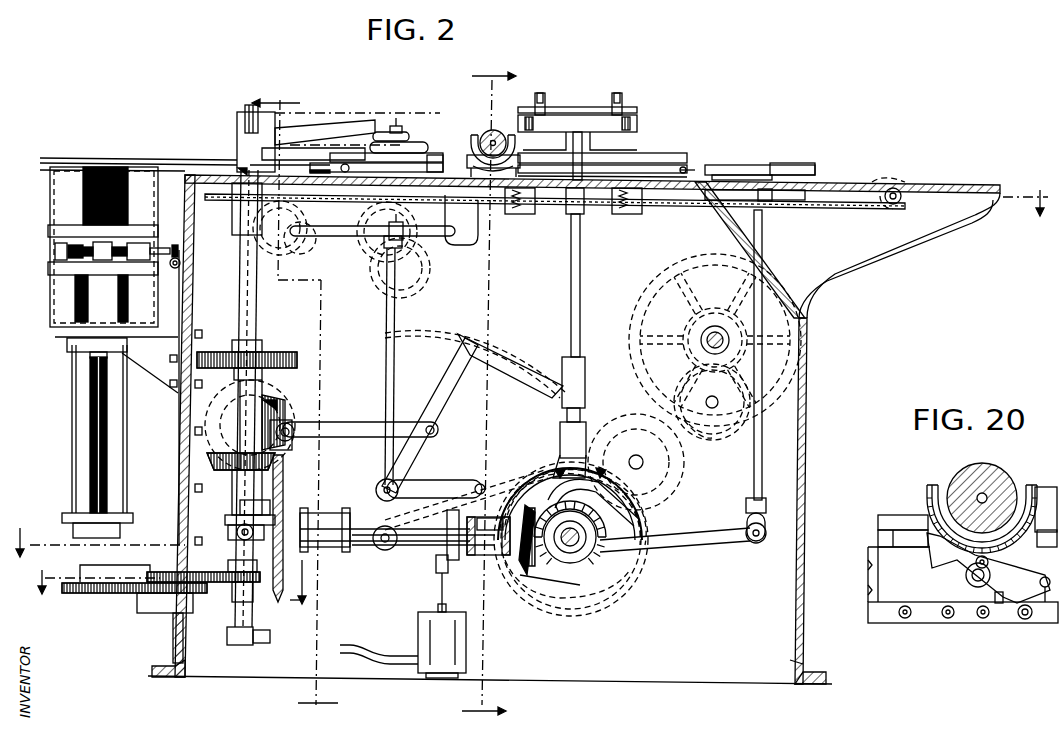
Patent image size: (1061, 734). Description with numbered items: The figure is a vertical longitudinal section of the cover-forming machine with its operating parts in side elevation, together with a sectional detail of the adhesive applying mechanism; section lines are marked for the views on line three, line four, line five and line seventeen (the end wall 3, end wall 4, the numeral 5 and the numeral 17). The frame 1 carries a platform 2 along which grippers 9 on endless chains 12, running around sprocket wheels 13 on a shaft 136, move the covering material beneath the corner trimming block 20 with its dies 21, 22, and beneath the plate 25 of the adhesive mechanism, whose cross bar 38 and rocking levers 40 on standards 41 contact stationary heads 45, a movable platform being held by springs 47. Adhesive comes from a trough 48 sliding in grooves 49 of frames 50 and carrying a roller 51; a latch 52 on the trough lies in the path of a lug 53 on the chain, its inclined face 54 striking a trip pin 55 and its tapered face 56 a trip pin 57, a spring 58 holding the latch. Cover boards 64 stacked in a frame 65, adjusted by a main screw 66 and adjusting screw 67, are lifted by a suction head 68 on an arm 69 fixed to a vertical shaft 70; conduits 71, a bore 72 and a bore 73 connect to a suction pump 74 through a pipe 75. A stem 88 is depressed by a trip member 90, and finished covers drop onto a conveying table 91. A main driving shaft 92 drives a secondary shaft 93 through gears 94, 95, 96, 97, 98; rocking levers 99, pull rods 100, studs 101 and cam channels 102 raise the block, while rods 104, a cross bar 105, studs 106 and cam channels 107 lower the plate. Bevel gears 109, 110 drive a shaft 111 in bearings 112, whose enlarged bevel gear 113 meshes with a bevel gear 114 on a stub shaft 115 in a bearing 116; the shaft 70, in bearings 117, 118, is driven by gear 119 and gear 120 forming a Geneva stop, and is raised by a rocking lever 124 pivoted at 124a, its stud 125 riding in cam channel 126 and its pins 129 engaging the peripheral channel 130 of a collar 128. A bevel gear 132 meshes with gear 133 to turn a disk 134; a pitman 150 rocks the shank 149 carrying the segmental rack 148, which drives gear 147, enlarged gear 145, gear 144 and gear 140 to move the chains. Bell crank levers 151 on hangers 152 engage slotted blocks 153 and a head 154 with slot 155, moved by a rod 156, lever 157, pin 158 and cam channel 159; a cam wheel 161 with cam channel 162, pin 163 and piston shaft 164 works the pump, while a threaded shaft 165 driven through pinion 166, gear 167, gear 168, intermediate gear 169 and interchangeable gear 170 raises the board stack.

In FIG. 2, the frame 1 is at (790, 470).
In FIG. 2, the platform 2 is at (935, 186).
In FIG. 2, the end wall 3 is at (806, 568).
In FIG. 2, the end wall 4 is at (162, 458).
In FIG. 2, the section line 5- 5 is at (683, 393).
In FIG. 2, the grippers 9 is at (310, 155).
In FIG. 2, the endless chains 12 is at (722, 165).
In FIG. 20, the endless chains 12 is at (920, 623).
In FIG. 2, the sprocket wheels 13 is at (893, 204).
In FIG. 2, the section line 17- 17 is at (160, 594).
In FIG. 2, the corner trimming block 20 is at (792, 165).
In FIG. 2, the die 21 is at (815, 170).
In FIG. 2, the die 22 is at (806, 202).
In FIG. 2, the plate 25 is at (562, 120).
In FIG. 2, the cross bar 38 is at (592, 106).
In FIG. 2, the rocking levers 40 is at (620, 95).
In FIG. 2, the standards 41 is at (535, 105).
In FIG. 2, the stationary heads 45 is at (583, 143).
In FIG. 2, the springs 47 is at (536, 210).
In FIG. 2, the trough 48 is at (472, 140).
In FIG. 20, the trough 48 is at (927, 490).
In FIG. 2, the grooves 49 is at (655, 165).
In FIG. 20, the grooves 49 is at (878, 534).
In FIG. 2, the frames 50 is at (640, 153).
In FIG. 20, the frames 50 is at (1046, 520).
In FIG. 2, the roller 51 is at (490, 130).
In FIG. 20, the roller 51 is at (966, 476).
In FIG. 2, the latch 52 is at (512, 162).
In FIG. 20, the latch 52 is at (1005, 583).
In FIG. 20, the lug 53 is at (998, 603).
In FIG. 20, the inclined face 54 is at (1025, 620).
In FIG. 2, the trip pin 55 is at (688, 165).
In FIG. 20, the trip pin 55 is at (1045, 623).
In FIG. 20, the tapered face 56 is at (878, 570).
In FIG. 2, the trip pin 57 is at (468, 160).
In FIG. 20, the spring 58 is at (966, 578).
In FIG. 2, the cover boards 64 is at (110, 168).
In FIG. 2, the frame 65 is at (60, 186).
In FIG. 2, the main screw 66 is at (175, 269).
In FIG. 2, the adjusting screw 67 is at (70, 262).
In FIG. 2, the suction head 68 is at (435, 154).
In FIG. 2, the arm 69 is at (290, 140).
In FIG. 2, the shaft 70 is at (240, 258).
In FIG. 2, the conduits 71 is at (410, 143).
In FIG. 2, the bore 72 is at (378, 134).
In FIG. 2, the bore 73 is at (138, 154).
In FIG. 2, the suction pump 74 is at (418, 636).
In FIG. 2, the pipe 75 is at (360, 648).
In FIG. 2, the stem 88 is at (397, 118).
In FIG. 2, the trip member 90 is at (245, 108).
In FIG. 2, the conveying table 91 is at (140, 160).
In FIG. 2, the main driving shaft 92 is at (728, 345).
In FIG. 2, the secondary driving shaft 93 is at (582, 560).
In FIG. 2, the gear 94 is at (690, 320).
In FIG. 2, the gear 95 is at (684, 404).
In FIG. 2, the gear 96 is at (620, 412).
In FIG. 2, the gear 97 is at (700, 445).
In FIG. 2, the gear 98 is at (630, 572).
In FIG. 2, the rocking levers 99 is at (720, 545).
In FIG. 2, the pull rods 100 is at (762, 420).
In FIG. 2, the studs 101 is at (640, 545).
In FIG. 2, the cam channels 102 is at (590, 575).
In FIG. 2, the rods 104 is at (581, 252).
In FIG. 2, the cross bar 105 is at (583, 420).
In FIG. 2, the studs 106 is at (562, 462).
In FIG. 2, the cam channels 107 is at (495, 518).
In FIG. 2, the bevel gear 109 is at (610, 565).
In FIG. 2, the bevel gear 110 is at (528, 568).
In FIG. 2, the shaft 111 is at (405, 546).
In FIG. 2, the bearings 112 is at (330, 548).
In FIG. 2, the enlarged bevel gear 113 is at (285, 496).
In FIG. 2, the bevel gear 114 is at (210, 468).
In FIG. 2, the stub shaft 115 is at (262, 374).
In FIG. 2, the bearing 116 is at (215, 412).
In FIG. 2, the bearing 117 is at (262, 340).
In FIG. 2, the bearing 118 is at (262, 488).
In FIG. 2, the gear 119 is at (230, 352).
In FIG. 2, the gear 120 is at (295, 352).
In FIG. 2, the rocking lever 124 is at (432, 515).
In FIG. 2, the pivot 124a is at (385, 550).
In FIG. 2, the stud 125 is at (590, 482).
In FIG. 2, the cam channel 126 is at (566, 598).
In FIG. 2, the collar 128 is at (226, 519).
In FIG. 2, the pins 129 is at (283, 560).
In FIG. 2, the peripheral channel 130 is at (236, 534).
In FIG. 2, the bevel gear 132 is at (300, 412).
In FIG. 2, the gear 133 is at (280, 400).
In FIG. 2, the disk 134 is at (290, 445).
In FIG. 2, the shaft 136 is at (280, 166).
In FIG. 2, the gear 140 is at (330, 260).
In FIG. 2, the gear 144 is at (340, 258).
In FIG. 2, the enlarged gear 145 is at (440, 250).
In FIG. 2, the gear 147 is at (415, 288).
In FIG. 2, the segmental rack 148 is at (508, 344).
In FIG. 2, the shank 149 is at (445, 388).
In FIG. 2, the pitman 150 is at (360, 434).
In FIG. 2, the bell crank levers 151 is at (362, 244).
In FIG. 2, the hangers 152 is at (300, 248).
In FIG. 2, the slotted blocks 153 is at (332, 200).
In FIG. 2, the head 154 is at (400, 248).
In FIG. 2, the slot 155 is at (396, 222).
In FIG. 2, the rod 156 is at (387, 343).
In FIG. 2, the lever 157 is at (400, 492).
In FIG. 2, the pin 158 is at (560, 478).
In FIG. 2, the cam channel 159 is at (556, 474).
In FIG. 2, the cam wheel 161 is at (455, 562).
In FIG. 2, the cam channel 162 is at (467, 548).
In FIG. 2, the pin 163 is at (438, 566).
In FIG. 2, the piston shaft 164 is at (442, 600).
In FIG. 2, the threaded shaft 165 is at (90, 398).
In FIG. 2, the pinion 166 is at (236, 572).
In FIG. 2, the gear 167 is at (165, 574).
In FIG. 2, the gear 168 is at (176, 614).
In FIG. 2, the intermediate gear 169 is at (140, 600).
In FIG. 2, the interchangeable gear 170 is at (100, 594).